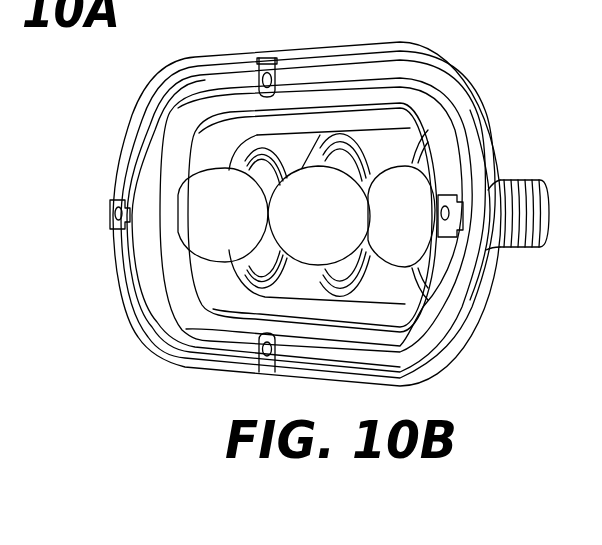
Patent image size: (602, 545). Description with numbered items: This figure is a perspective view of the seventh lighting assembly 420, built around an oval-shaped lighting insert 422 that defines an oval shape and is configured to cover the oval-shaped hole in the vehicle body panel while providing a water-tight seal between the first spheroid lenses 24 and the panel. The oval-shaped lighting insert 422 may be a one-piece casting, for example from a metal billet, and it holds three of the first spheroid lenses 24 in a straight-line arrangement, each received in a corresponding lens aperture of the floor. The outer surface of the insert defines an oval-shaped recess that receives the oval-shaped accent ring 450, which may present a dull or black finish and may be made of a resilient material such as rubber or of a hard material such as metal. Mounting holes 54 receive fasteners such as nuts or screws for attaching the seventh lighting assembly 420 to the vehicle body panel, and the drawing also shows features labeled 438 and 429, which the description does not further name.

The seventh lighting assembly 420 is at (98, 124).
The oval-shaped lighting insert 422 is at (457, 56).
The oval-shaped accent ring 450 is at (343, 70).
The housing body 438 is at (480, 257).
The mounting holes 54 is at (523, 177).
The reflector cavity 429 is at (233, 297).
The first spheroid lenses 24 is at (198, 202).